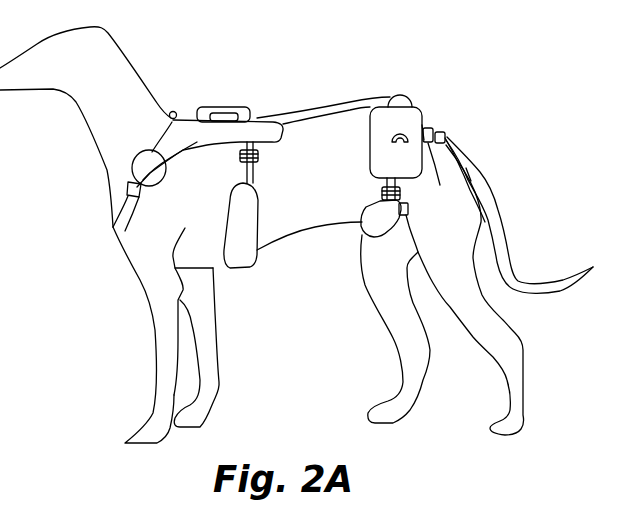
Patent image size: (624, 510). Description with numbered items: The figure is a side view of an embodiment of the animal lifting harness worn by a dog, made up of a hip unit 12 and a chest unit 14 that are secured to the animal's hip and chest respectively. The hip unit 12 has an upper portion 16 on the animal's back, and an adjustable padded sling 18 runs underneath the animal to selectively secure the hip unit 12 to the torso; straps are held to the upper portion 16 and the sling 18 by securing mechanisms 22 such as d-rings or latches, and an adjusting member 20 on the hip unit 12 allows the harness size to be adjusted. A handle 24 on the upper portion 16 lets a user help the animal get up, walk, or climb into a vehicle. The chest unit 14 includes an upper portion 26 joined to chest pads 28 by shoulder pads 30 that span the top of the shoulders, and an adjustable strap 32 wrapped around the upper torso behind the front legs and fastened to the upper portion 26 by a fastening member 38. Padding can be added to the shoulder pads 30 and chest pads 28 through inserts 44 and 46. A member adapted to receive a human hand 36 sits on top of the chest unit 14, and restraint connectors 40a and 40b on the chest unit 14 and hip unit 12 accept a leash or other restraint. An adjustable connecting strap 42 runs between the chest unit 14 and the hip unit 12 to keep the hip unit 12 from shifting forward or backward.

The hip unit 12 is at (318, 286).
The chest unit 14 is at (215, 70).
The upper portion of the hip unit 16 is at (402, 157).
The padded sling 18 is at (364, 232).
The adjusting member 20 is at (471, 180).
The securing mechanisms 22 is at (440, 128).
The handle 24 is at (398, 130).
The upper portion of the chest unit 26 is at (260, 127).
The chest pads 28 is at (112, 228).
The shoulder pads 30 is at (133, 157).
The adjustable strap 32 is at (238, 250).
The member adapted to receive a human hand 36 is at (227, 107).
The fastening member 38 is at (330, 100).
The restraint connector 40a is at (173, 111).
The restraint connector 40b is at (418, 112).
The connecting strap 42 is at (397, 93).
The insert 44 is at (178, 153).
The insert 46 is at (127, 192).